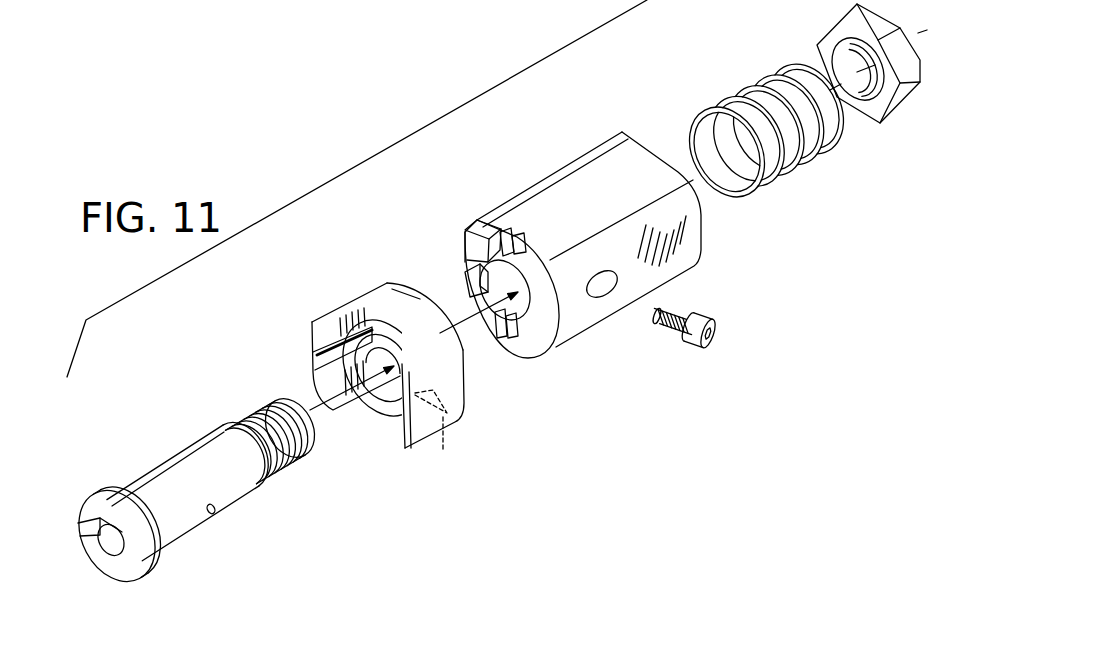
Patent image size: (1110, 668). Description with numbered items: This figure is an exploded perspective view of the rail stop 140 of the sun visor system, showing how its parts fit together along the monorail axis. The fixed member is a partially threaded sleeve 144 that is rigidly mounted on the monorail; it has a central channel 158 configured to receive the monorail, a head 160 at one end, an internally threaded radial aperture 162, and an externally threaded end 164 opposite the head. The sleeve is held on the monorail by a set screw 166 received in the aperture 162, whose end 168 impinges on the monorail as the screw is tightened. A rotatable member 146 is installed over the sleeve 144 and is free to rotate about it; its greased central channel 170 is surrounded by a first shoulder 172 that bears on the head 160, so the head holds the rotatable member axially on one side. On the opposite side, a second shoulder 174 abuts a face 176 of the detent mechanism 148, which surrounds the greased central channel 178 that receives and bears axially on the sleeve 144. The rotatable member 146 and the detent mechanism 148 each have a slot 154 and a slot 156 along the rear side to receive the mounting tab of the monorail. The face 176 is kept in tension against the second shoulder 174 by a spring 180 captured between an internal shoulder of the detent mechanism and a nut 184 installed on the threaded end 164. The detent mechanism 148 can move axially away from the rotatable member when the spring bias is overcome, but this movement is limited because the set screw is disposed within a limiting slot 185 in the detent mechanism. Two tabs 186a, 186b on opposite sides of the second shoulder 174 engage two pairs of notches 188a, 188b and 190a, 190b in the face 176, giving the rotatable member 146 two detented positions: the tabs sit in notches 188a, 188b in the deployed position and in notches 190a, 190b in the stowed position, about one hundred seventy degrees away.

The rail stop 140 is at (230, 329).
The partially threaded sleeve 144 is at (158, 472).
The rotatable member 146 is at (390, 285).
The detent mechanism 148 is at (578, 158).
The slot 154 is at (317, 360).
The slot 156 is at (469, 262).
The central channel 158 is at (114, 545).
The head 160 is at (90, 505).
The radial aperture 162 is at (215, 517).
The externally threaded end 164 is at (262, 412).
The set screw 166 is at (693, 338).
The end 168 is at (650, 316).
The central channel 170 is at (378, 404).
The first shoulder 172 is at (343, 412).
The second shoulder 174 is at (466, 402).
The face 176 is at (546, 313).
The central channel 178 is at (452, 337).
The spring 180 is at (784, 168).
The nut 184 is at (906, 106).
The limiting slot 185 is at (618, 283).
The tab 186a is at (420, 293).
The tab 186b is at (438, 441).
The notch 188a is at (510, 231).
The notch 188b is at (536, 358).
The notch 190a is at (497, 322).
The notch 190b is at (520, 236).